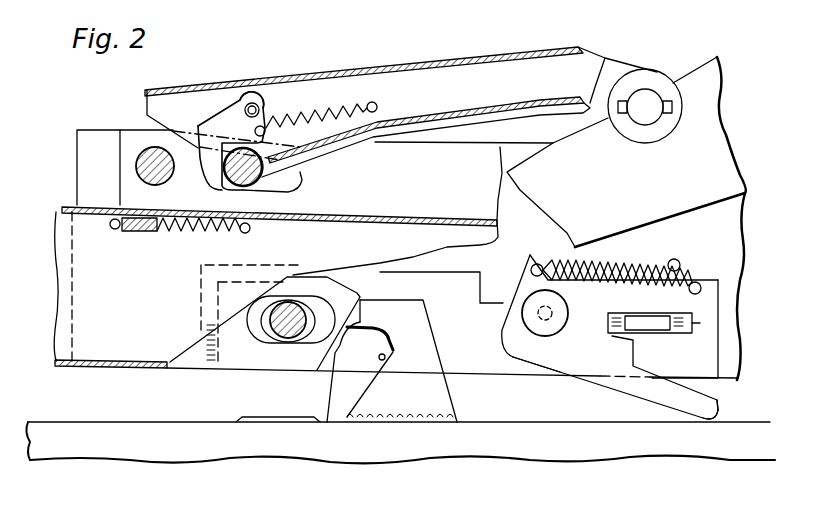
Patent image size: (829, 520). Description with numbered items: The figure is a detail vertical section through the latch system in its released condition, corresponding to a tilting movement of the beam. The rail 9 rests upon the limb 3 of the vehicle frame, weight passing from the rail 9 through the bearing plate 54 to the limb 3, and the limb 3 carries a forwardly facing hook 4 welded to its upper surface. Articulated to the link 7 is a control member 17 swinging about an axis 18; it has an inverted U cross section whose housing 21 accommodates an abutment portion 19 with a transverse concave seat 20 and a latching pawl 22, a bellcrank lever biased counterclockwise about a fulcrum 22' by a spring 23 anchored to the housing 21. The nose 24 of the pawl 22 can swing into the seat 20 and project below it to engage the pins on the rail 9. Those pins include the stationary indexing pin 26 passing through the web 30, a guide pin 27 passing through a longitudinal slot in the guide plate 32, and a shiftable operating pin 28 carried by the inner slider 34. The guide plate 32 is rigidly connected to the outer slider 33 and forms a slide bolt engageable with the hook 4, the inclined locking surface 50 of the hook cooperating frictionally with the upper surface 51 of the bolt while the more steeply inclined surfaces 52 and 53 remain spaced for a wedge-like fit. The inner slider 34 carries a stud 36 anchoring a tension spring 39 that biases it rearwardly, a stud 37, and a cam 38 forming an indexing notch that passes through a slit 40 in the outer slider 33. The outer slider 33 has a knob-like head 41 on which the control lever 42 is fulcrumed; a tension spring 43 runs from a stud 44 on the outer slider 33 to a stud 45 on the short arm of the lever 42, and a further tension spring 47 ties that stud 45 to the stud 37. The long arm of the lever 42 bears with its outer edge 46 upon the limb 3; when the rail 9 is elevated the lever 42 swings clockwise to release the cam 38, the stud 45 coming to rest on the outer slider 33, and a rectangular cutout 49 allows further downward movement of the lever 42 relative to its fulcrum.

The limb 3 is at (75, 450).
The hook 4 is at (441, 408).
The link 7 is at (705, 80).
The rail 9 is at (90, 348).
The control member 17 is at (341, 66).
The axis 18 is at (645, 100).
The abutment portion 19 is at (537, 103).
The concave seat 20 is at (280, 166).
The housing 21 is at (515, 62).
The latching pawl 22 is at (225, 115).
The fulcrum 22' is at (269, 55).
The spring 23 is at (288, 122).
The nose 24 is at (213, 172).
The indexing pin 26 is at (140, 158).
The guide pin 27 is at (290, 335).
The operating pin 28 is at (246, 140).
The web 30 is at (457, 158).
The guide plate 32 is at (315, 292).
The outer slider 33 is at (683, 372).
The inner slider 34 is at (83, 170).
The stud 36 is at (108, 226).
The stud 37 is at (680, 263).
The cam 38 is at (647, 328).
The tension spring 39 is at (135, 232).
The slit 40 is at (700, 323).
The knob-like head 41 is at (540, 333).
The control lever 42 is at (562, 376).
The tension spring 43 is at (683, 283).
The stud 44 is at (722, 282).
The stud 45 is at (540, 266).
The outer edge 46 is at (708, 413).
The further tension spring 47 is at (659, 245).
The rectangular cutout 49 is at (500, 302).
The locking surface 50 is at (377, 323).
The upper surface 51 is at (345, 300).
The surface 52 is at (335, 356).
The surface 53 is at (384, 360).
The bearing plate 54 is at (249, 422).